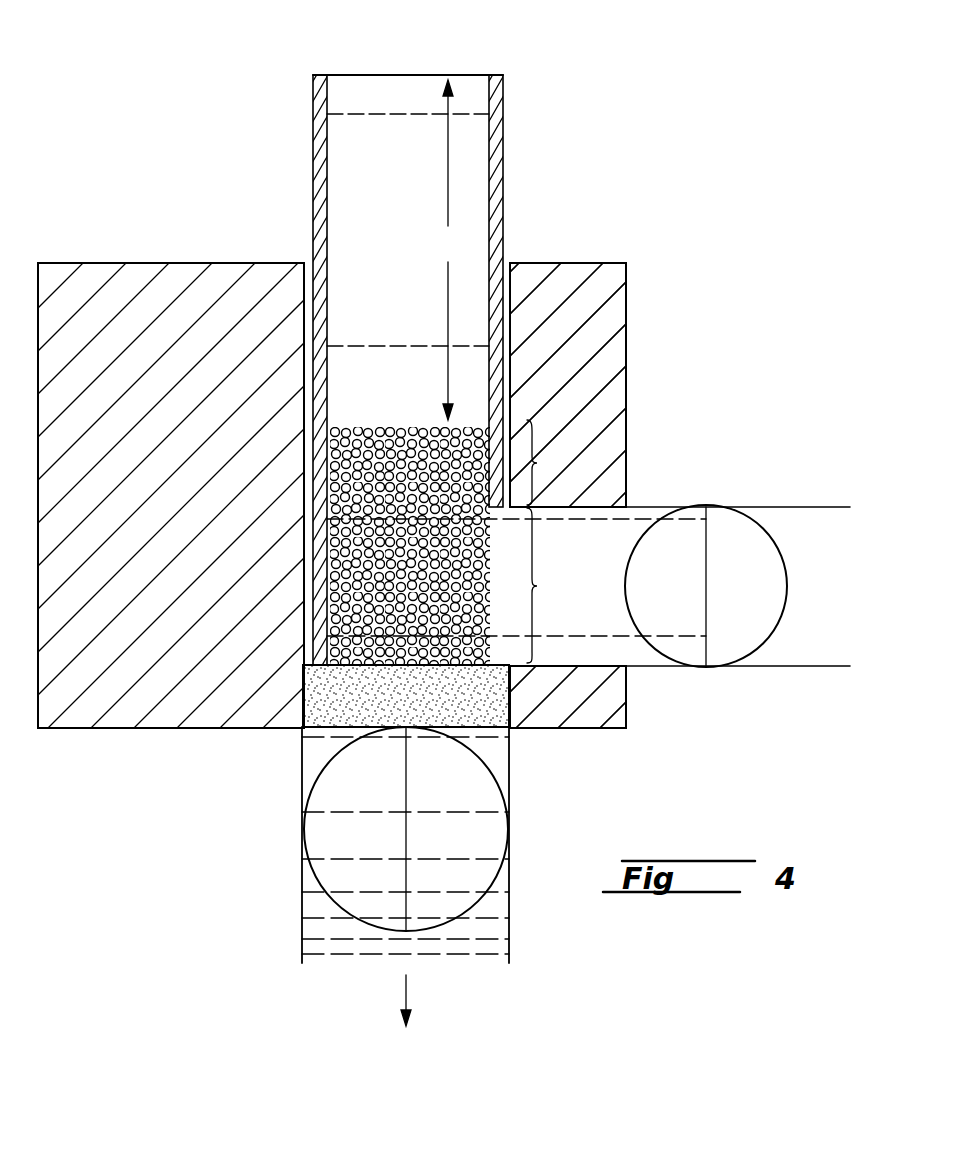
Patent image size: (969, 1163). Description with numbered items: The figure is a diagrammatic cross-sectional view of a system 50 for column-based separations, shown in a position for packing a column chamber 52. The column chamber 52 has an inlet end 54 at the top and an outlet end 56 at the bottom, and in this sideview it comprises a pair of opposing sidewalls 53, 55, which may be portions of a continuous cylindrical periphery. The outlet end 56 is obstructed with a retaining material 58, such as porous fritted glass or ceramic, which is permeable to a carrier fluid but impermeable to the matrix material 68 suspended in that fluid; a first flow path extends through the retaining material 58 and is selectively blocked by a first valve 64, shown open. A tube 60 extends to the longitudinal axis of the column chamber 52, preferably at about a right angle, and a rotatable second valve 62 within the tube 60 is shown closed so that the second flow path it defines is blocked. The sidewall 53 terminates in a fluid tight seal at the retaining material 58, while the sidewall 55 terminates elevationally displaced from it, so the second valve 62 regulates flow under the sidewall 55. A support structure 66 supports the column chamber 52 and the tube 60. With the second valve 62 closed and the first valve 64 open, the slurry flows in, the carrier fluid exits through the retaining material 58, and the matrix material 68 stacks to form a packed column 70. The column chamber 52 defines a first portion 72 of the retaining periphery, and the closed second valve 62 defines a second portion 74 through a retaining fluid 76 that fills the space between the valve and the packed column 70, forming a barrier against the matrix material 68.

The system 50 is at (752, 202).
The column chamber 52 is at (406, 369).
The sidewall 53 is at (315, 200).
The inlet end 54 is at (366, 95).
The sidewall 55 is at (497, 218).
The outlet end 56 is at (320, 744).
The retaining material 58 is at (482, 705).
The tube 60 is at (771, 490).
The second valve 62 is at (735, 625).
The first valve 64 is at (327, 855).
The support structure 66 is at (75, 245).
The matrix material 68 is at (405, 425).
The packed column 70 is at (318, 616).
The first portion 72 is at (552, 462).
The second portion 74 is at (516, 585).
The retaining fluid 76 is at (618, 650).